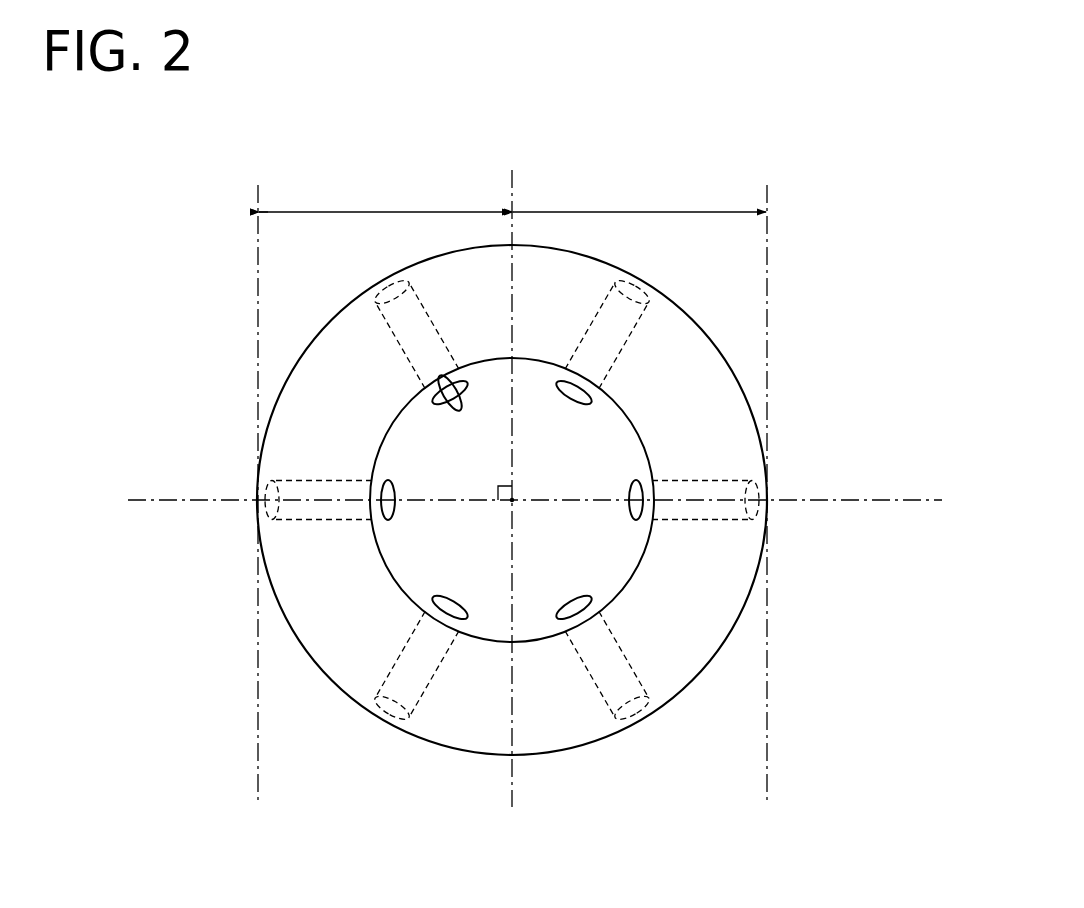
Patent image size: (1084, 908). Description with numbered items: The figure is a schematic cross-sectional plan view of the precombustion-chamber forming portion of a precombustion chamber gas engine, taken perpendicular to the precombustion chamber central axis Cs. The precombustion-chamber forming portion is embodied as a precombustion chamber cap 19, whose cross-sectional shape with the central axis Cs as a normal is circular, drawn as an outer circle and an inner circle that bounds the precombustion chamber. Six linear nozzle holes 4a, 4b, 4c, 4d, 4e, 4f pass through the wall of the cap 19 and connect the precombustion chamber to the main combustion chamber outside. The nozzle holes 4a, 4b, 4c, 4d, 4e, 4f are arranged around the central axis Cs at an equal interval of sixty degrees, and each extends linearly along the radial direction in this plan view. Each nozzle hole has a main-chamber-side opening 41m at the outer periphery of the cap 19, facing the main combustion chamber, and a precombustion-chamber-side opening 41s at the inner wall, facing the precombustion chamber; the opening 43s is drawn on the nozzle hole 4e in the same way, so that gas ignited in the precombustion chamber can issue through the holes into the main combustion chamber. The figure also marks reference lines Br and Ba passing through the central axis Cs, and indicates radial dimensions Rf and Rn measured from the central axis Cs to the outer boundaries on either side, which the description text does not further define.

The precombustion chamber cap 19 is at (836, 216).
The nozzle hole 4a is at (640, 318).
The nozzle hole 4b is at (748, 481).
The nozzle hole 4c is at (630, 665).
The nozzle hole 4d is at (420, 700).
The nozzle hole 4e is at (281, 443).
The nozzle hole 4f is at (411, 369).
The main-chamber-side opening 41m is at (385, 320).
The precombustion-chamber-side opening 41s is at (463, 397).
The hole inner opening 43s is at (288, 480).
The precombustion chamber central axis Cs is at (513, 499).
The radial axis Br is at (513, 202).
The horizontal axis Ba is at (884, 500).
The radius Rf is at (385, 198).
The radius Rn is at (639, 198).